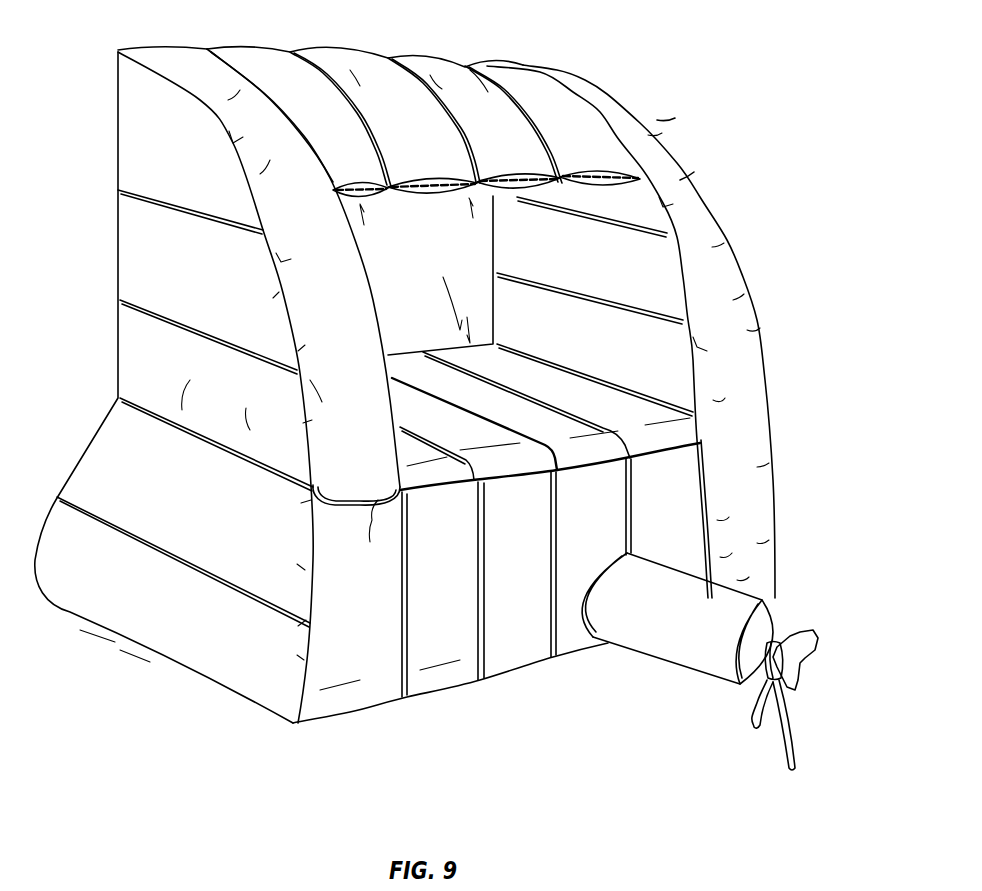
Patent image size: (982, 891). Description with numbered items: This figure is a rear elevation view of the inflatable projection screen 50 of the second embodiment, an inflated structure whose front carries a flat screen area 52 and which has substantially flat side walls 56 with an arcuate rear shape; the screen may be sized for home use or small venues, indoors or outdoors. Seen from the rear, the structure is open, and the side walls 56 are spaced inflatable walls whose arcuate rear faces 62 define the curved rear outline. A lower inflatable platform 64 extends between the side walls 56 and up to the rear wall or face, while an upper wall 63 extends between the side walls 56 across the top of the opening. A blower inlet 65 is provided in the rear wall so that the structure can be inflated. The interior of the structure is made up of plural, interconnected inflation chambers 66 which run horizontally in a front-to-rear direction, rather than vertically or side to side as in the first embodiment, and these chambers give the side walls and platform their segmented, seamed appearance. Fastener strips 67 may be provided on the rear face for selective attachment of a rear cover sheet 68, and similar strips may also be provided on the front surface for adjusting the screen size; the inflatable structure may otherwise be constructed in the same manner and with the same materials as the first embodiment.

The inflatable projection screen 50 is at (428, 390).
The flat screen area 52 is at (423, 288).
The side walls 56 is at (428, 387).
The arcuate rear faces 62 is at (334, 396).
The upper wall 63 is at (497, 113).
The lower inflatable platform 64 is at (655, 410).
The blower inlet 65 is at (697, 648).
The inflation chambers 66 is at (167, 295).
The fastener strips 67 is at (275, 287).
The rear cover sheet 68 is at (741, 331).